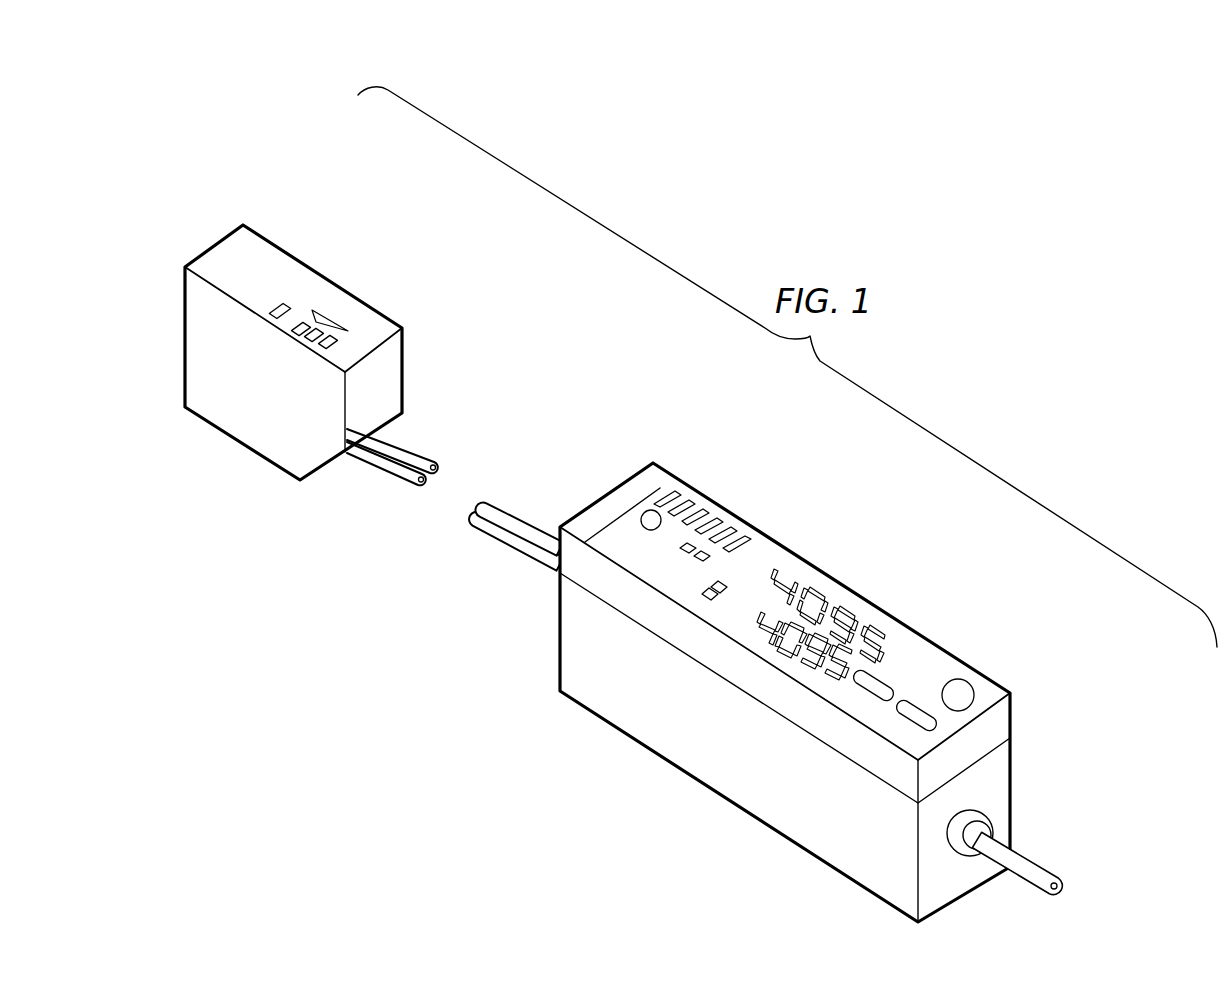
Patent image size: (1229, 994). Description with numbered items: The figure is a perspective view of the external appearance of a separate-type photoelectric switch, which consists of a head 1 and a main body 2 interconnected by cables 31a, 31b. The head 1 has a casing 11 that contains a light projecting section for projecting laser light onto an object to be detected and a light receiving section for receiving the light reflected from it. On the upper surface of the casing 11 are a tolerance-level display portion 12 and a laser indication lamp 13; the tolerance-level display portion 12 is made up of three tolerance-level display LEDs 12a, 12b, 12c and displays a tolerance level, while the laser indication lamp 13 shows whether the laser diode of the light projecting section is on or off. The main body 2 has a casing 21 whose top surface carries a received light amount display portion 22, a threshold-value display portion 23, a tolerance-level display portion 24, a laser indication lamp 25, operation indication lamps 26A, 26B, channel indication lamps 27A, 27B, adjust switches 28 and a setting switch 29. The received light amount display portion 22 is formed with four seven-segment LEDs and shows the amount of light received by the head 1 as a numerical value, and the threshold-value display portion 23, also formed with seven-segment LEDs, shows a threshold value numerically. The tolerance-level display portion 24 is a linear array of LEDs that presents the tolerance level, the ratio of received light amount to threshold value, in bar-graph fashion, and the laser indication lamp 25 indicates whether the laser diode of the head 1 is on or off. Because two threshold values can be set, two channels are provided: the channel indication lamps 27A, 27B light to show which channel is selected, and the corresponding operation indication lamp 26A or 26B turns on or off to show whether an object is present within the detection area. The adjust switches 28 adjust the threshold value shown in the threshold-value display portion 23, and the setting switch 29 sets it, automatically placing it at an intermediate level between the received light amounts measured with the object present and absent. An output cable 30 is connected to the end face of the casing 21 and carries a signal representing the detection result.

The head 1 is at (299, 358).
The casing 11 is at (380, 309).
The tolerance-level display portion 12 is at (249, 422).
The tolerance-level display LED 12a is at (325, 351).
The tolerance-level display LED 12b is at (310, 341).
The tolerance-level display LED 12c is at (298, 334).
The laser indication lamp 13 is at (277, 306).
The main body 2 is at (765, 686).
The casing 21 is at (877, 607).
The received light amount display portion 22 is at (824, 588).
The threshold-value display portion 23 is at (786, 648).
The tolerance-level display portion 24 is at (738, 531).
The laser indication lamp 25 is at (642, 512).
The operation indication lamp 26A is at (688, 553).
The operation indication lamp 26B is at (702, 561).
The channel indication lamp 27A is at (722, 583).
The channel indication lamp 27B is at (712, 600).
The adjust switches 28 is at (913, 707).
The setting switch 29 is at (962, 690).
The output cable 30 is at (1025, 866).
The cable 31a is at (497, 513).
The cable 31b is at (505, 532).